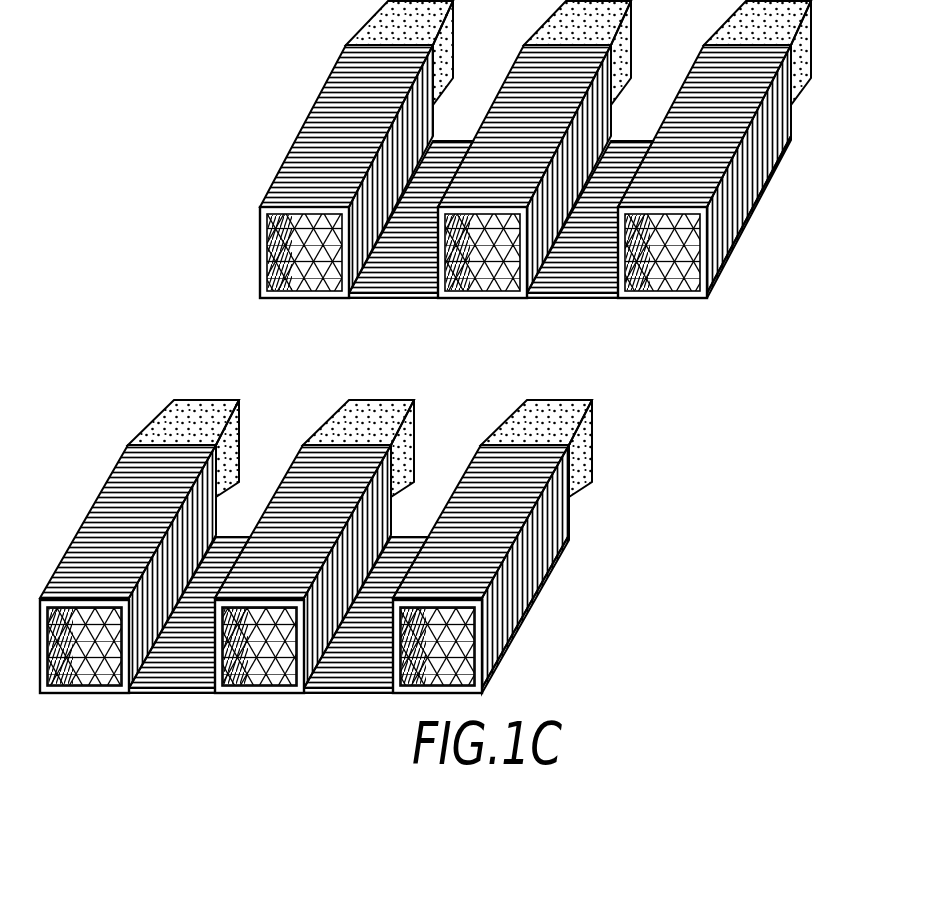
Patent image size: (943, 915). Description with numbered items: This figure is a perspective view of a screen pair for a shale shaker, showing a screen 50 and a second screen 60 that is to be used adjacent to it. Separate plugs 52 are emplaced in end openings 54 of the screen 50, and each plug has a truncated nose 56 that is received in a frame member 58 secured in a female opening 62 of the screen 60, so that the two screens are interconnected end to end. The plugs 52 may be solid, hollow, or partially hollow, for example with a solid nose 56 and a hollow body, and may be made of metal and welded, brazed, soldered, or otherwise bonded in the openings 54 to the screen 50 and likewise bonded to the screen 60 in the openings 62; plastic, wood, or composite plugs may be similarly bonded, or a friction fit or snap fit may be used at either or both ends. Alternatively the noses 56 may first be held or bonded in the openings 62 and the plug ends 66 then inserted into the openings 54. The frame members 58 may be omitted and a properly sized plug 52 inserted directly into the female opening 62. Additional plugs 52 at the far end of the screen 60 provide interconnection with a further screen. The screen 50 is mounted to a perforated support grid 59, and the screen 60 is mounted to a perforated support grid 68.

The screen 50 is at (356, 560).
The plug 52 is at (232, 433).
The end opening 54 is at (220, 490).
The truncated nose 56 is at (189, 398).
The frame member 58 is at (39, 665).
The perforated support grid 59 is at (268, 690).
The screen 60 is at (515, 175).
The female opening 62 is at (340, 267).
The plug end 66 is at (568, 537).
The perforated support grid 68 is at (308, 268).